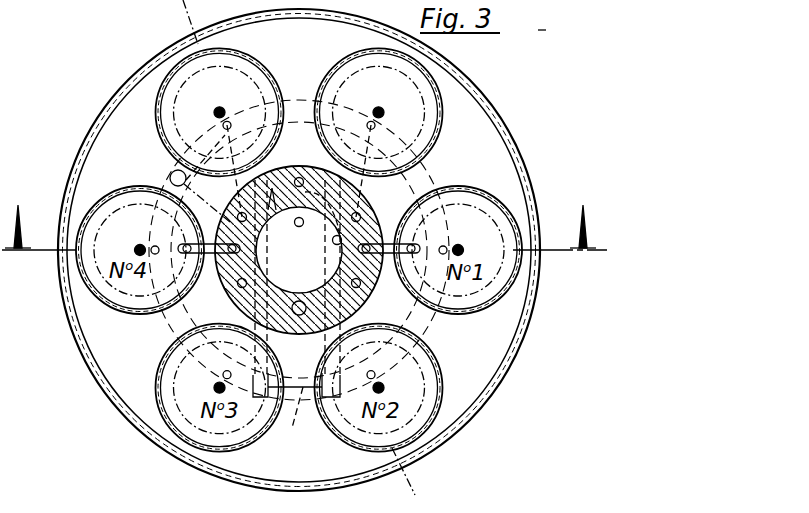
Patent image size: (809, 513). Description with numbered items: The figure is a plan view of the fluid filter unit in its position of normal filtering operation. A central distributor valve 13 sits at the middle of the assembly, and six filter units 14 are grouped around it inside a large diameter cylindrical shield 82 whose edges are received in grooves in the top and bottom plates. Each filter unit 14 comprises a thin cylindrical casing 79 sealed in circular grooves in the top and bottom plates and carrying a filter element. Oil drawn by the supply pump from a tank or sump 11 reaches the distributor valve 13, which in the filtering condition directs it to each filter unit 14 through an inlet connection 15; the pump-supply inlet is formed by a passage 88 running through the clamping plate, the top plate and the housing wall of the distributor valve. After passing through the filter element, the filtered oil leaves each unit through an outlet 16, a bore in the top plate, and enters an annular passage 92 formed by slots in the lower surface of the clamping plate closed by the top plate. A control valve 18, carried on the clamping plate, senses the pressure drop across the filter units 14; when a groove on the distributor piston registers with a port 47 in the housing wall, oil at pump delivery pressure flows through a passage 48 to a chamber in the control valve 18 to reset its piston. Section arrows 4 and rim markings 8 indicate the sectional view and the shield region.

The section line 4- 4 is at (304, 224).
The casing ring 8 is at (208, 16).
The tank or sump 11 is at (180, 14).
The distributor valve 13 is at (332, 260).
The filter unit 14 is at (446, 127).
The inlet connection 15 is at (143, 350).
The outlet 16 is at (155, 244).
The control valve 18 is at (289, 423).
The port 47 is at (310, 223).
The passage 48 is at (273, 263).
The cylindrical casing 79 is at (160, 136).
The cylindrical shield 82 is at (478, 408).
The passage 88 is at (298, 332).
The annular passage 92 is at (298, 96).